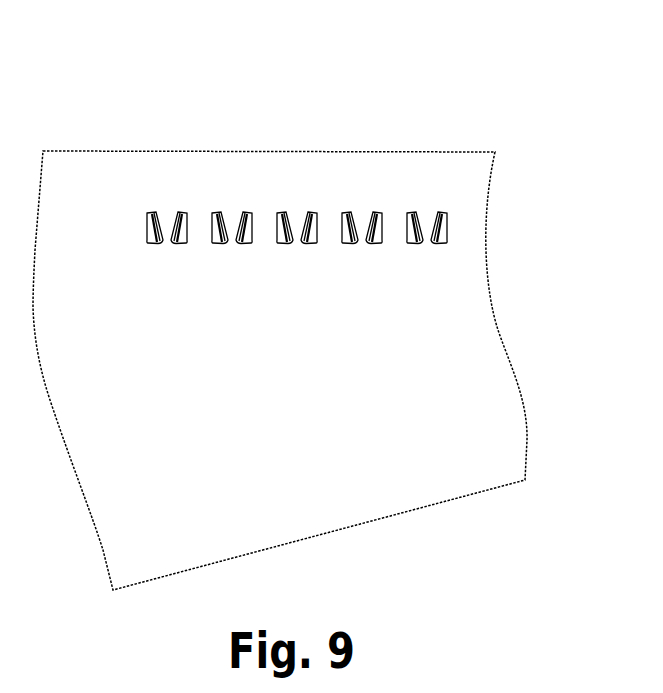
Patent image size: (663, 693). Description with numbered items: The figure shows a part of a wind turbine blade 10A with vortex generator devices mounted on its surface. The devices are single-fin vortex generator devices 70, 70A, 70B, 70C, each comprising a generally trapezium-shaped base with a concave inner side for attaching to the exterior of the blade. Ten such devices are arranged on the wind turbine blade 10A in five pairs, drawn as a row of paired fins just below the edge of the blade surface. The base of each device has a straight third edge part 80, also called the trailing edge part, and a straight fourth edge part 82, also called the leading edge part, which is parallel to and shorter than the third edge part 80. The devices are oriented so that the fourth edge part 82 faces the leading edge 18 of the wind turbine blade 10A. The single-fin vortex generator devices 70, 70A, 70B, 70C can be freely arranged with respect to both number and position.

The wind turbine blade 10A is at (280, 313).
The leading edge 18 is at (375, 152).
The single-fin vortex generator device 70 is at (297, 235).
The single-fin vortex generator device 70A is at (167, 228).
The single-fin vortex generator device 70B is at (268, 199).
The single-fin vortex generator device 70C is at (297, 228).
The third edge part 80 is at (240, 237).
The fourth edge part 82 is at (280, 199).